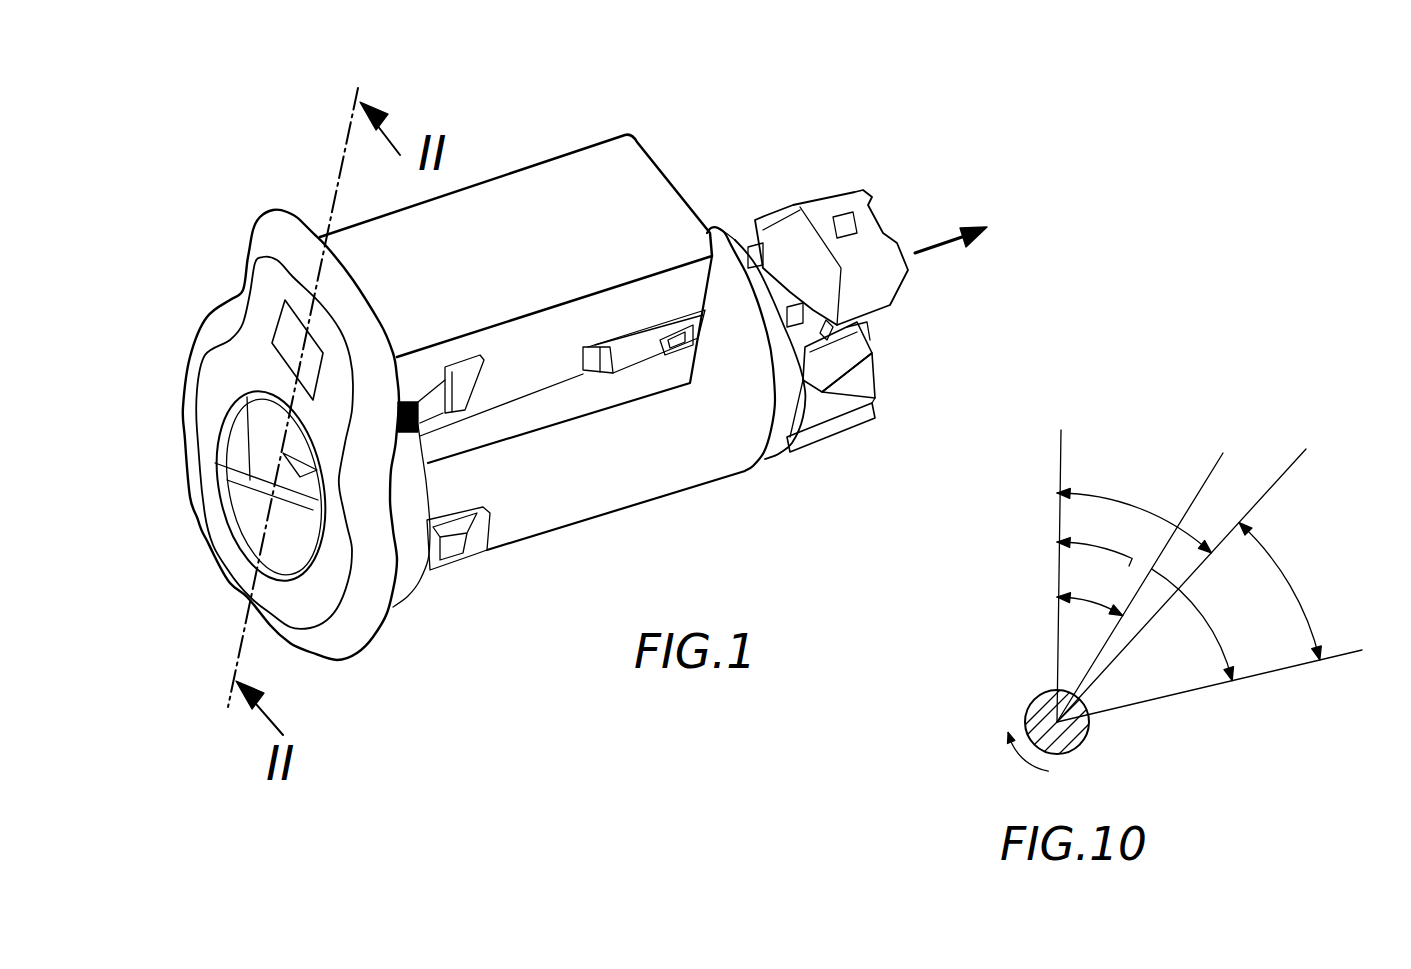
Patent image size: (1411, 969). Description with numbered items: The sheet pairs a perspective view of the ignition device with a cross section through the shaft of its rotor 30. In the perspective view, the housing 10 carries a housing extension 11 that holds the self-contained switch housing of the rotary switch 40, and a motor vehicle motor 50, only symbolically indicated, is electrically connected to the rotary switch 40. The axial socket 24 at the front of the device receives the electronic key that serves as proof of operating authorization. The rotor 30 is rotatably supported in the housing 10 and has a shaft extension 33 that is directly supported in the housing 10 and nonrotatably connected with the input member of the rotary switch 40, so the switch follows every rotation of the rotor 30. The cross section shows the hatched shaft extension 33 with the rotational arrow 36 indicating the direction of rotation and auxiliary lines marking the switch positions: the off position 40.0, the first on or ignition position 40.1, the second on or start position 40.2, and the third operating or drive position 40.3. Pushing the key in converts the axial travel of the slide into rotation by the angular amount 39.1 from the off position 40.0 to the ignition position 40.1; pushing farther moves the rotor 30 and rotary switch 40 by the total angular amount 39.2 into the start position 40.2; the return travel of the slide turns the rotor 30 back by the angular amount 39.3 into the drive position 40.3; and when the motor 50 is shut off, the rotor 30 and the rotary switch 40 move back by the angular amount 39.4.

In FIG. 1, the housing 10 is at (538, 212).
In FIG. 1, the housing extension 11 is at (840, 420).
In FIG. 1, the axial socket 24 is at (290, 468).
In FIG. 1, the rotary switch 40 is at (838, 217).
In FIG. 1, the motor vehicle motor 50 is at (979, 221).
In FIG. 10, the rotor 30 is at (1096, 763).
In FIG. 10, the shaft extension 33 is at (1028, 707).
In FIG. 10, the rotational arrow 36 is at (1025, 762).
In FIG. 10, the angular amount 39.1 is at (1060, 575).
In FIG. 10, the total angular amount 39.2 is at (1062, 518).
In FIG. 10, the angular amount 39.3 is at (1282, 575).
In FIG. 10, the angular amount 39.4 is at (1127, 500).
In FIG. 10, the off position 40.0 is at (1058, 437).
In FIG. 10, the first on position 40.1 is at (1221, 455).
In FIG. 10, the second on position 40.2 is at (1348, 662).
In FIG. 10, the third operating position 40.3 is at (1304, 453).